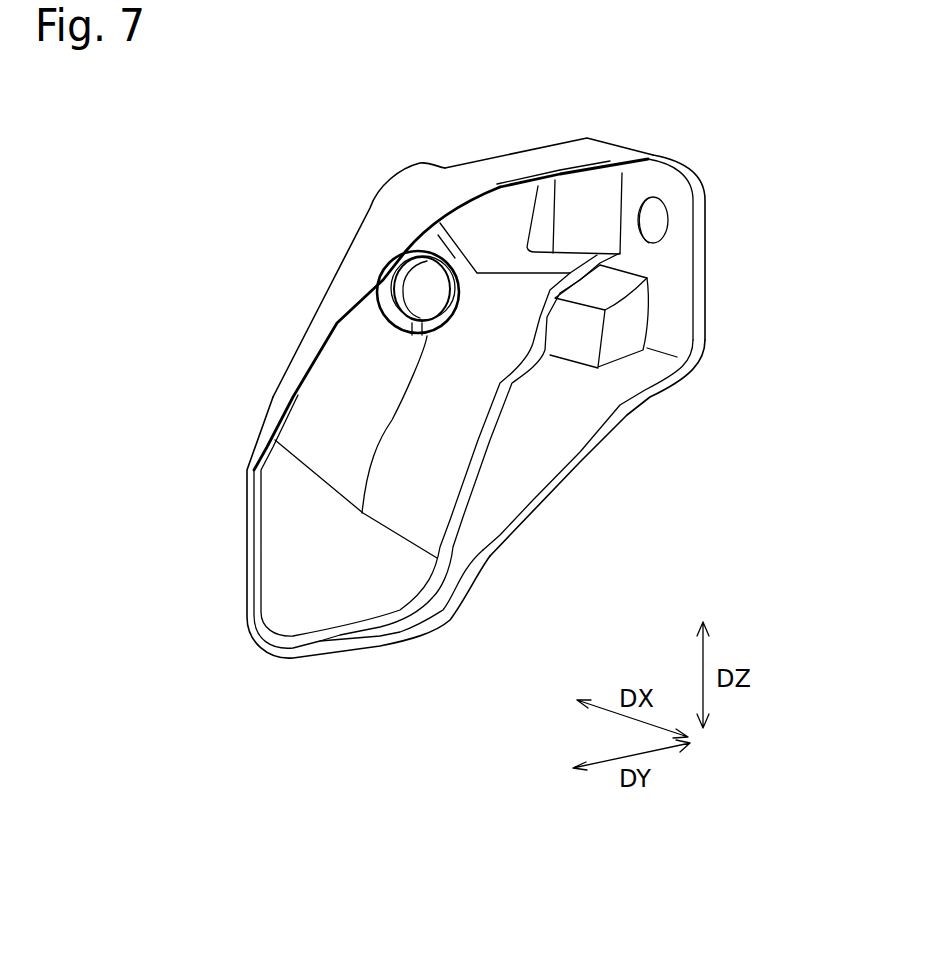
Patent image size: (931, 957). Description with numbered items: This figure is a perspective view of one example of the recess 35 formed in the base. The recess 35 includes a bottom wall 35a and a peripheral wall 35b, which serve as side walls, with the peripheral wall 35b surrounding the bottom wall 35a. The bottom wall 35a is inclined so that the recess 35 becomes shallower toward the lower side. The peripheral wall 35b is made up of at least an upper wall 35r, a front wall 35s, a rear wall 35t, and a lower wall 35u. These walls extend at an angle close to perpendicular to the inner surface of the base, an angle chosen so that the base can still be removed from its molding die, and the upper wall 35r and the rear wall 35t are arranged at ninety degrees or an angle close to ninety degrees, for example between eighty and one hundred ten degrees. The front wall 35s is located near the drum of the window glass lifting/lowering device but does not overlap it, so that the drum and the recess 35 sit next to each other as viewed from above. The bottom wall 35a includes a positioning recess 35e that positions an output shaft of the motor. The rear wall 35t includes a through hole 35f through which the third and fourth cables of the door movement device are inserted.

The recess 35 is at (776, 122).
The bottom wall 35a is at (353, 363).
The peripheral wall 35b is at (470, 176).
The positioning recess 35e is at (407, 292).
The through hole 35f is at (653, 210).
The upper wall 35r is at (568, 156).
The front wall 35s is at (382, 227).
The rear wall 35t is at (670, 280).
The lower wall 35u is at (547, 435).